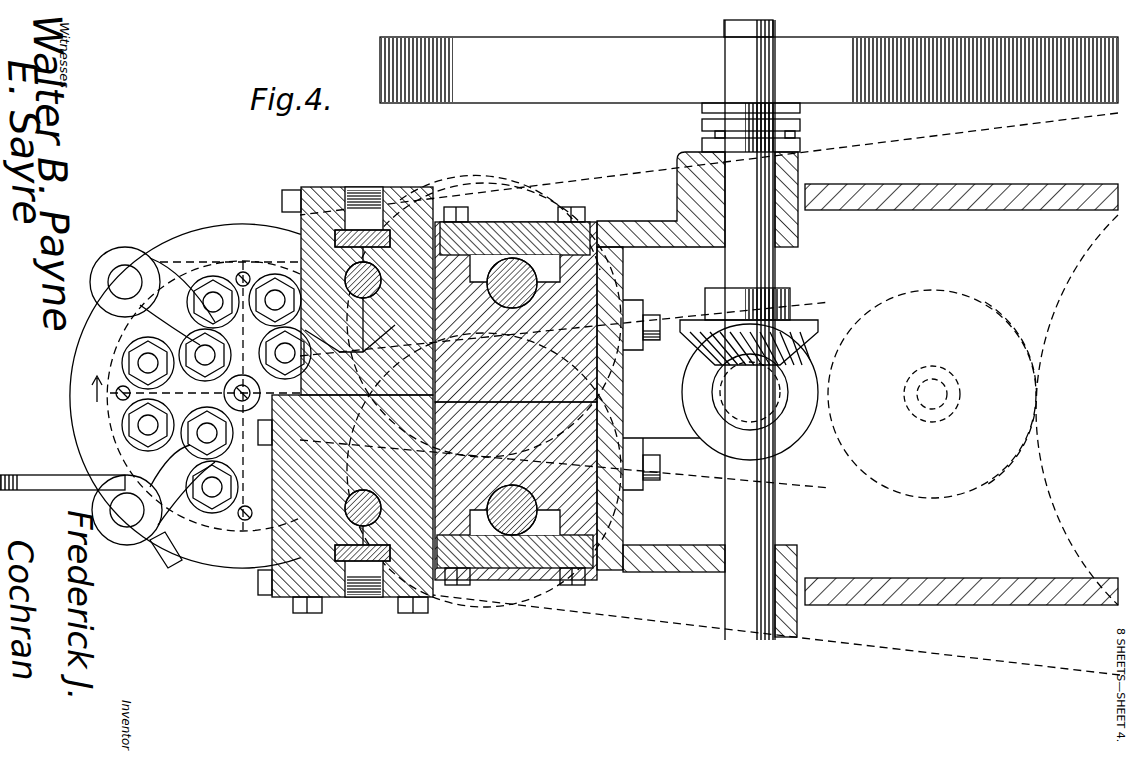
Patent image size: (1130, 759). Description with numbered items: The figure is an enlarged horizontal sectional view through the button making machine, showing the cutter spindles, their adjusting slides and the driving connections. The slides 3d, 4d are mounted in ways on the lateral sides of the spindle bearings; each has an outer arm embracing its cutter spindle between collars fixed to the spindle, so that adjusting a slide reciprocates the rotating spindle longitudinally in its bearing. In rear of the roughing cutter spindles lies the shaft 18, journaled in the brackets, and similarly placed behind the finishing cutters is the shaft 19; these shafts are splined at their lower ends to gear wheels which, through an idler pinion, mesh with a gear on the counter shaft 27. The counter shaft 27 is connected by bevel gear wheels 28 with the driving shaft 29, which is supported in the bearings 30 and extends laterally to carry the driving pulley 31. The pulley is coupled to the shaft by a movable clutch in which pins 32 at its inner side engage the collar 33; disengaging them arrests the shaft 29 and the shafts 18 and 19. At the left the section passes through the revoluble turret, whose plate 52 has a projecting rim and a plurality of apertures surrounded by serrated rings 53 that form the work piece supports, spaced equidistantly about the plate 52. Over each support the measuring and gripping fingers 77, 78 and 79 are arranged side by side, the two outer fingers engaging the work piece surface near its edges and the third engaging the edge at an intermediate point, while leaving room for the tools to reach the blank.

The slide 3d is at (365, 200).
The slide 4d is at (362, 590).
The shaft 18 is at (508, 268).
The shaft 19 is at (512, 525).
The counter shaft 27 is at (740, 398).
The bevel gear wheels 28 is at (800, 345).
The driving shaft 29 is at (749, 330).
The bearings 30 is at (705, 165).
The driving pulley 31 is at (749, 70).
The pins 32 is at (796, 137).
The collar 33 is at (798, 152).
The plate 52 is at (75, 390).
The rings 53 is at (118, 262).
The finger 77 is at (180, 284).
The finger 78 is at (238, 398).
The finger 79 is at (180, 419).